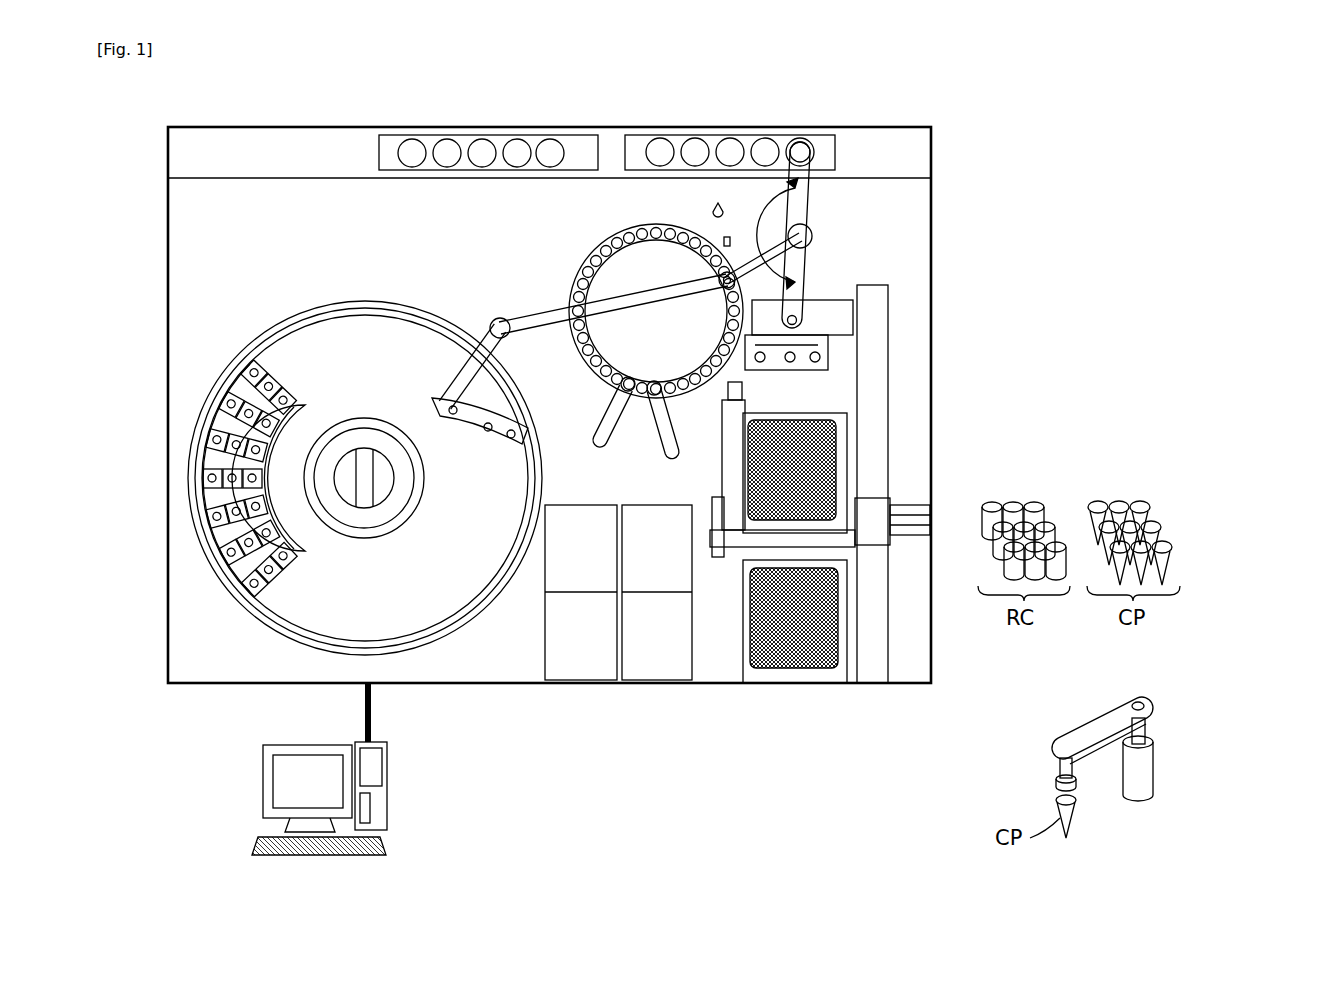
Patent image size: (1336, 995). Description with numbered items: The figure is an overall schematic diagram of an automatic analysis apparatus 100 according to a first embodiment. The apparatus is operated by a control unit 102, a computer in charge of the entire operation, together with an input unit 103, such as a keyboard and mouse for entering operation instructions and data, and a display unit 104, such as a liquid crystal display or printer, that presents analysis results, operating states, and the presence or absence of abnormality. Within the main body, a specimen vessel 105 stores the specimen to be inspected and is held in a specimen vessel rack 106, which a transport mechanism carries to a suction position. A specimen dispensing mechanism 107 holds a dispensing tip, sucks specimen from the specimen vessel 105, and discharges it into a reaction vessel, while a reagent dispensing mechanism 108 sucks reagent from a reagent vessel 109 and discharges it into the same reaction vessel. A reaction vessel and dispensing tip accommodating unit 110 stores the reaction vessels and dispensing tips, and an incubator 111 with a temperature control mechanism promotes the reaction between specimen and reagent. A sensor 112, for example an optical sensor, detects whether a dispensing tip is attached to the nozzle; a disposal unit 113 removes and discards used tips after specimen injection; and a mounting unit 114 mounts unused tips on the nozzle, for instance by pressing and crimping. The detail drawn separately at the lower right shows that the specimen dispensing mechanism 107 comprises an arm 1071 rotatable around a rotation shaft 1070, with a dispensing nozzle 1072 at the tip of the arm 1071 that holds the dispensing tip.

The automatic analysis apparatus 100 is at (918, 220).
The control unit 102 is at (388, 772).
The input unit 103 is at (378, 842).
The display unit 104 is at (280, 779).
The specimen vessel 105 is at (660, 147).
The specimen vessel rack 106 is at (823, 137).
The specimen dispensing mechanism 107 is at (812, 205).
The reagent dispensing mechanism 108 is at (543, 292).
The reagent vessel 109 is at (248, 470).
The reaction vessel and dispensing tip accommodating unit 110 is at (822, 455).
The incubator 111 is at (618, 267).
The sensor 112 is at (728, 237).
The disposal unit 113 is at (718, 203).
The mounting unit 114 is at (800, 313).
The rotation shaft 1070 is at (1153, 765).
The arm 1071 is at (1097, 720).
The dispensing nozzle 1072 is at (1060, 766).